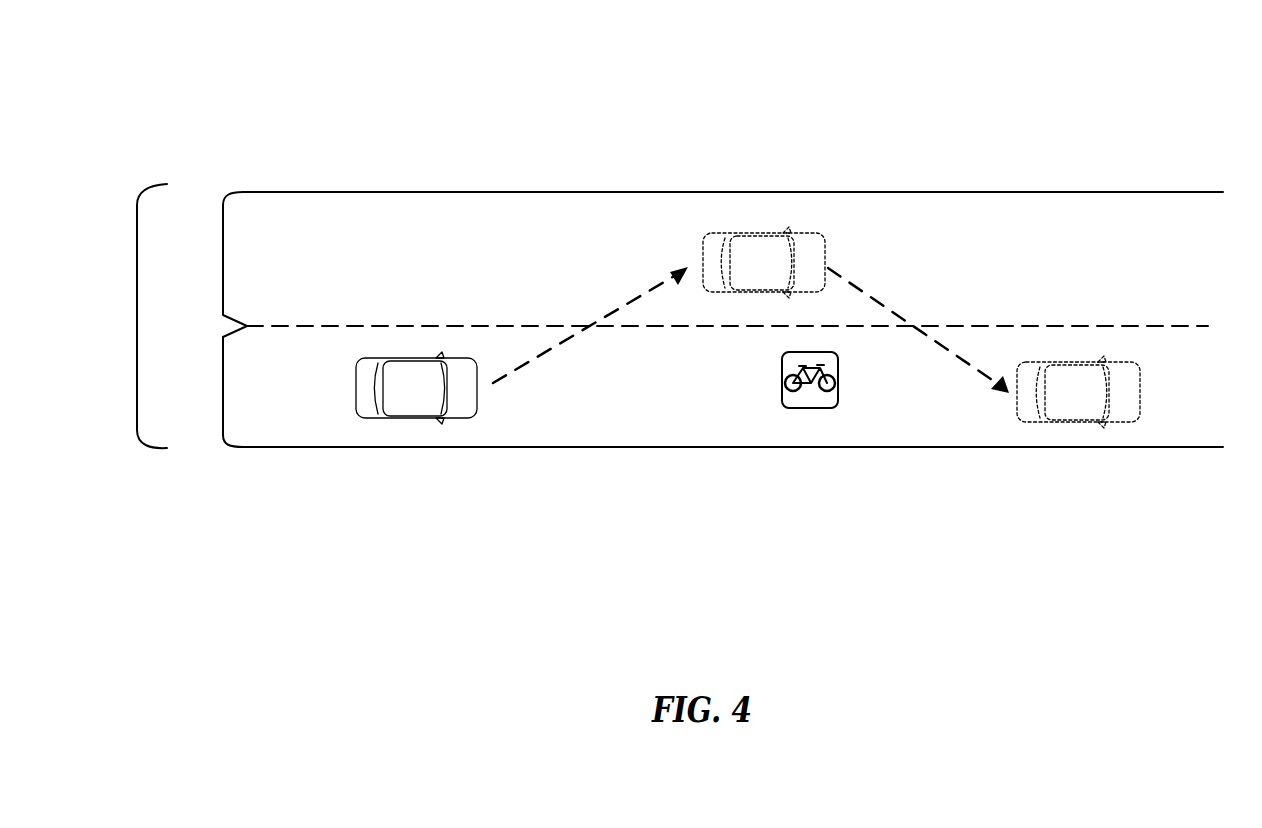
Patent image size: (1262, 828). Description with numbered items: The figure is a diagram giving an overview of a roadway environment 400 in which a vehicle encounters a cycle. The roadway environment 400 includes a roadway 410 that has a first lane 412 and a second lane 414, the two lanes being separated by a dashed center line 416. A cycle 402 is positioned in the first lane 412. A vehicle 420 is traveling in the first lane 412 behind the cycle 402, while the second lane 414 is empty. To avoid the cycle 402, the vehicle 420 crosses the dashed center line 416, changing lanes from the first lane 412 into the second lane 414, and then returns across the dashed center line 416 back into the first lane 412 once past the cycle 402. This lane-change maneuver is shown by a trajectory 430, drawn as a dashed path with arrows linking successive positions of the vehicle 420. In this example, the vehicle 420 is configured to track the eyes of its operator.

The roadway environment 400 is at (374, 93).
The cycle 402 is at (838, 368).
The roadway 410 is at (137, 317).
The first lane 412 is at (223, 387).
The second lane 414 is at (223, 259).
The dashed center line 416 is at (1208, 326).
The vehicle 420 is at (427, 405).
The trajectory 430 is at (558, 345).